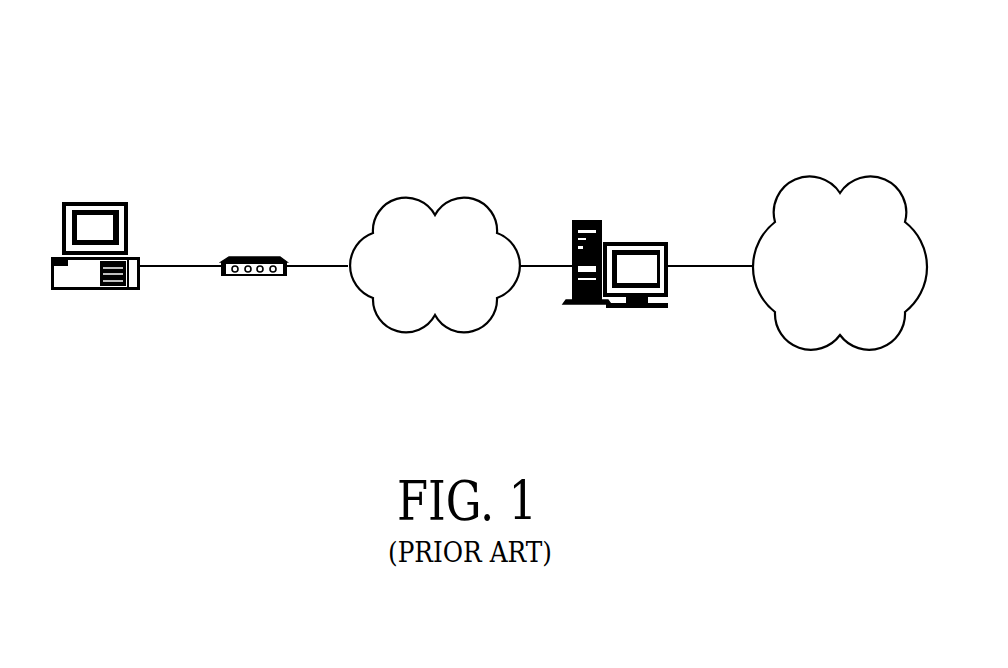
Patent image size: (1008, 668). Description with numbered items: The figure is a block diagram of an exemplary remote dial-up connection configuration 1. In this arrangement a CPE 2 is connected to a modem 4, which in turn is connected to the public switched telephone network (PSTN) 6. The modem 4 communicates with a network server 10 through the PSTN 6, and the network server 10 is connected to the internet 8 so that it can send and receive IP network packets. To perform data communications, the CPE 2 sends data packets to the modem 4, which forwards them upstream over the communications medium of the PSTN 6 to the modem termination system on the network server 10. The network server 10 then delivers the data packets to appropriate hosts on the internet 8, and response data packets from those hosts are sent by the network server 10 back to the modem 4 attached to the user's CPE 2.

The dial-up connection configuration 1 is at (549, 96).
The CPE 2 is at (94, 202).
The modem 4 is at (253, 257).
The public switched telephone network (PSTN) 6 is at (427, 295).
The internet 8 is at (832, 295).
The network server 10 is at (585, 220).